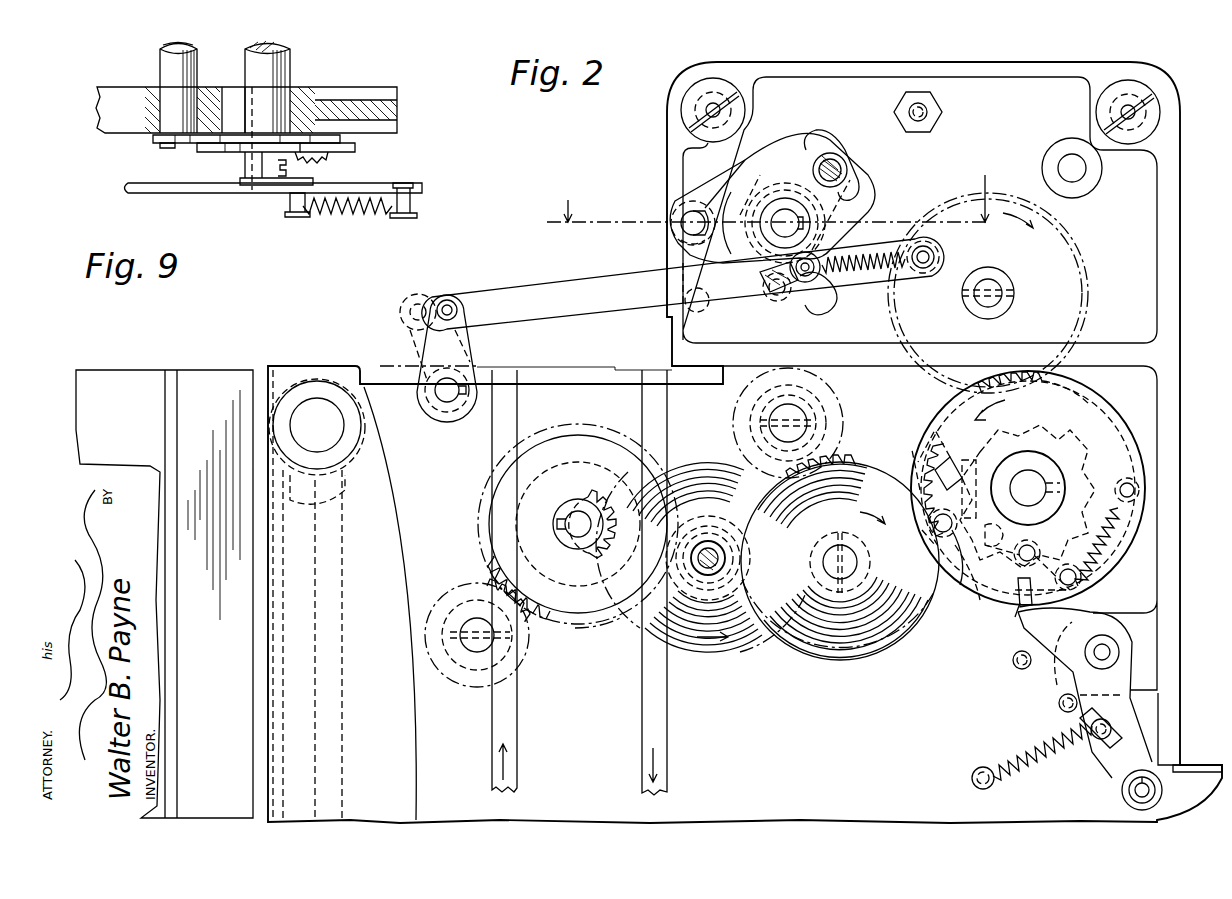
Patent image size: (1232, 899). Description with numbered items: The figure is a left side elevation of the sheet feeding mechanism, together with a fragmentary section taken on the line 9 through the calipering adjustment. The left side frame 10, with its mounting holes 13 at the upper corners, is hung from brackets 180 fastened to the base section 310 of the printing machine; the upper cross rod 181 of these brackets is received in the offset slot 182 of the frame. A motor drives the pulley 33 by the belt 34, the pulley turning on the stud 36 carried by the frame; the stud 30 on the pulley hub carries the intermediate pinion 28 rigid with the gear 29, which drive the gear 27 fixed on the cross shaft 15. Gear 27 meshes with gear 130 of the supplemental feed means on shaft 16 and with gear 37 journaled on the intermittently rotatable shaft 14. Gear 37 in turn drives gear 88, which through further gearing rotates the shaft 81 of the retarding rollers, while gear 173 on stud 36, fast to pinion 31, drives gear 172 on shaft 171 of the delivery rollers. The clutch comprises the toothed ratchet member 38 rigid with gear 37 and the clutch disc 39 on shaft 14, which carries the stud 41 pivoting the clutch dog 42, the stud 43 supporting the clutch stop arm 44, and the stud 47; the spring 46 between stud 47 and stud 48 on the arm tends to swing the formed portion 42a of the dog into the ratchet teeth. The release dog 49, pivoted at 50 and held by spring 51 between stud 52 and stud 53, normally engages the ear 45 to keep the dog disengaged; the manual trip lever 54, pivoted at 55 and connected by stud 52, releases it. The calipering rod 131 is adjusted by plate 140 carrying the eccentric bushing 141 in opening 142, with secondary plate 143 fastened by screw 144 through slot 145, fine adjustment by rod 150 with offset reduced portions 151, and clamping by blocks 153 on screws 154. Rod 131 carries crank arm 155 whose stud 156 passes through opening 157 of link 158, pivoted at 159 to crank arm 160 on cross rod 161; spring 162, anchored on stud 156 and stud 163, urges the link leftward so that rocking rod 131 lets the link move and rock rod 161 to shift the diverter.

In FIG. 9, the side frame 10 is at (353, 100).
In FIG. 2, the side frame 10 is at (745, 442).
In FIG. 2, the mounting screw hole 13 is at (713, 100).
In FIG. 2, the intermittently rotatable shaft 14 is at (1028, 488).
In FIG. 2, the cross shaft 15 is at (860, 572).
In FIG. 2, the shaft 16 is at (800, 415).
In FIG. 2, the gear 27 is at (835, 485).
In FIG. 2, the intermediate pinion 28 is at (712, 590).
In FIG. 2, the gear 29 is at (707, 462).
In FIG. 2, the stud 30 is at (728, 556).
In FIG. 2, the pinion 31 is at (576, 490).
In FIG. 2, the pulley 33 is at (535, 587).
In FIG. 2, the belt 34 is at (579, 582).
In FIG. 2, the stud 36 is at (585, 515).
In FIG. 2, the gear 37 is at (1055, 392).
In FIG. 2, the toothed ratchet member 38 is at (1068, 432).
In FIG. 2, the clutch disc 39 is at (1122, 430).
In FIG. 2, the stud 41 is at (948, 535).
In FIG. 2, the clutch dog 42 is at (918, 462).
In FIG. 2, the formed portion 42a is at (945, 455).
In FIG. 2, the stud 43 is at (1020, 562).
In FIG. 2, the clutch stop arm 44 is at (1018, 598).
In FIG. 2, the ear 45 is at (1020, 618).
In FIG. 2, the spring 46 is at (1110, 532).
In FIG. 2, the stud 47 is at (1135, 490).
In FIG. 2, the stud 48 is at (1080, 582).
In FIG. 2, the clutch release dog 49 is at (1052, 652).
In FIG. 2, the pivot 50 is at (1110, 652).
In FIG. 2, the spring 51 is at (1052, 756).
In FIG. 2, the stud 52 is at (1097, 748).
In FIG. 2, the stud 53 is at (975, 780).
In FIG. 2, the manual trip lever 54 is at (1200, 765).
In FIG. 2, the pivot 55 is at (1163, 790).
In FIG. 2, the shaft 81 is at (995, 286).
In FIG. 2, the gear 88 is at (1082, 258).
In FIG. 2, the gear 130 is at (740, 405).
In FIG. 9, the rod 131 is at (280, 60).
In FIG. 2, the rod 131 is at (752, 228).
In FIG. 9, the plate 140 is at (355, 147).
In FIG. 2, the plate 140 is at (872, 196).
In FIG. 9, the eccentric bushing 141 is at (233, 92).
In FIG. 2, the eccentric bushing 141 is at (782, 208).
In FIG. 9, the opening 142 is at (236, 86).
In FIG. 9, the secondary plate 143 is at (205, 153).
In FIG. 2, the secondary plate 143 is at (720, 185).
In FIG. 9, the screw 144 is at (330, 158).
In FIG. 2, the screw 144 is at (838, 155).
In FIG. 2, the slot 145 is at (852, 182).
In FIG. 9, the rod 150 is at (160, 62).
In FIG. 2, the rod 150 is at (672, 216).
In FIG. 9, the reduced portion 151 is at (160, 146).
In FIG. 2, the reduced portion 151 is at (680, 238).
In FIG. 2, the block 153 is at (766, 298).
In FIG. 2, the screw 154 is at (795, 312).
In FIG. 9, the crank arm 155 is at (314, 181).
In FIG. 2, the crank arm 155 is at (822, 290).
In FIG. 9, the stud 156 is at (297, 218).
In FIG. 2, the stud 156 is at (818, 290).
In FIG. 2, the opening 157 is at (775, 300).
In FIG. 9, the link 158 is at (200, 194).
In FIG. 2, the link 158 is at (683, 284).
In FIG. 2, the pivot 159 is at (450, 300).
In FIG. 2, the crank arm 160 is at (468, 348).
In FIG. 2, the cross rod 161 is at (447, 402).
In FIG. 9, the spring 162 is at (355, 218).
In FIG. 2, the spring 162 is at (872, 252).
In FIG. 9, the stud 163 is at (414, 204).
In FIG. 2, the stud 163 is at (937, 252).
In FIG. 2, the shaft 171 is at (480, 660).
In FIG. 2, the gear 172 is at (523, 655).
In FIG. 2, the gear 173 is at (577, 626).
In FIG. 2, the bracket 180 is at (344, 595).
In FIG. 2, the cross rod 181 is at (317, 425).
In FIG. 2, the offset slot 182 is at (340, 498).
In FIG. 2, the base section 310 is at (192, 380).
In FIG. 2, the section line 9 is at (768, 187).